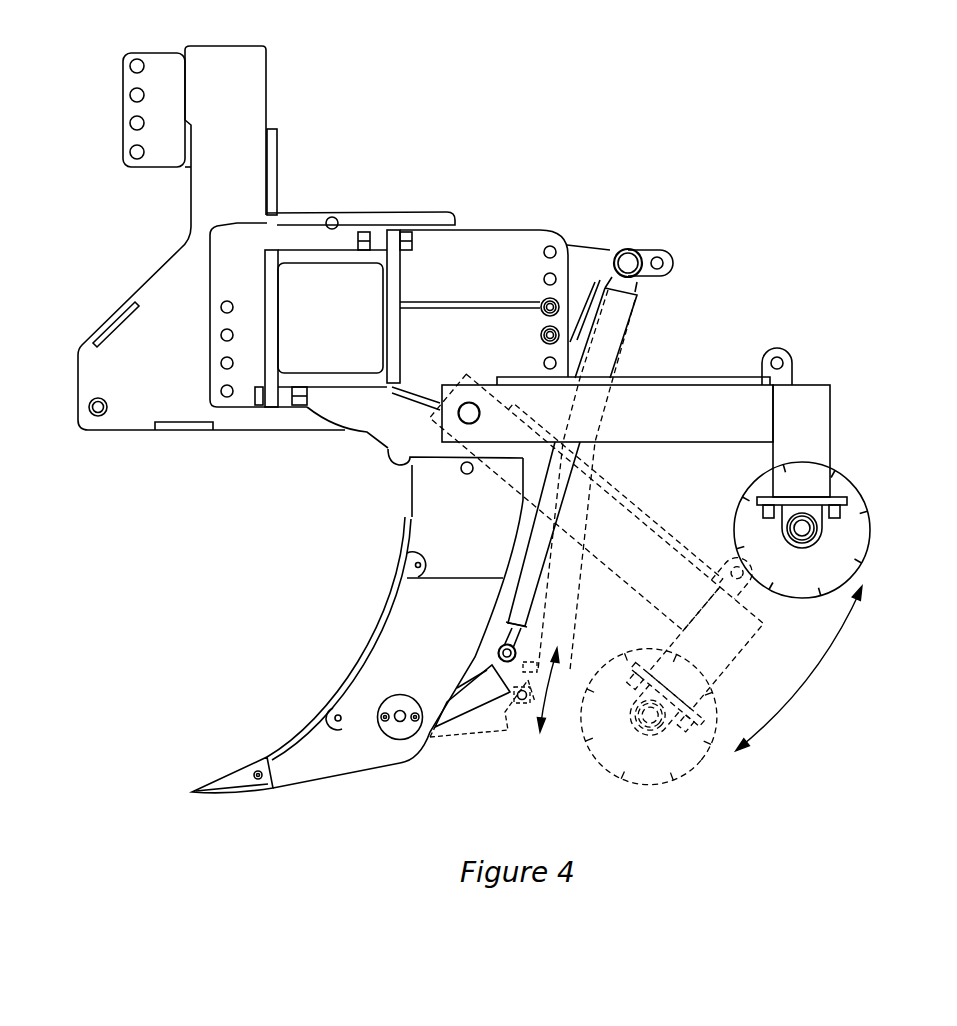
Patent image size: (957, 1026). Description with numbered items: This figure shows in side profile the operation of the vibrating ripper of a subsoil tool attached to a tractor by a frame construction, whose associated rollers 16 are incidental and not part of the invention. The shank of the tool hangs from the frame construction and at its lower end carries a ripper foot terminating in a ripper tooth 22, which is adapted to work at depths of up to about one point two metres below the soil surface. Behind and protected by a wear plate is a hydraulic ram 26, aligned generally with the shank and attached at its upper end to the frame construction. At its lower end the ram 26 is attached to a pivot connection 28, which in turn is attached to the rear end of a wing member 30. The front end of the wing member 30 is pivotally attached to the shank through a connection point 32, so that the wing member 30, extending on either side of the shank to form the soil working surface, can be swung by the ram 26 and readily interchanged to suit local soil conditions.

The rollers 16 is at (865, 528).
The ripper tooth 22 is at (208, 783).
The hydraulic ram 26 is at (535, 570).
The pivot connection 28 is at (520, 650).
The wing member 30 is at (513, 733).
The connection point 32 is at (400, 720).